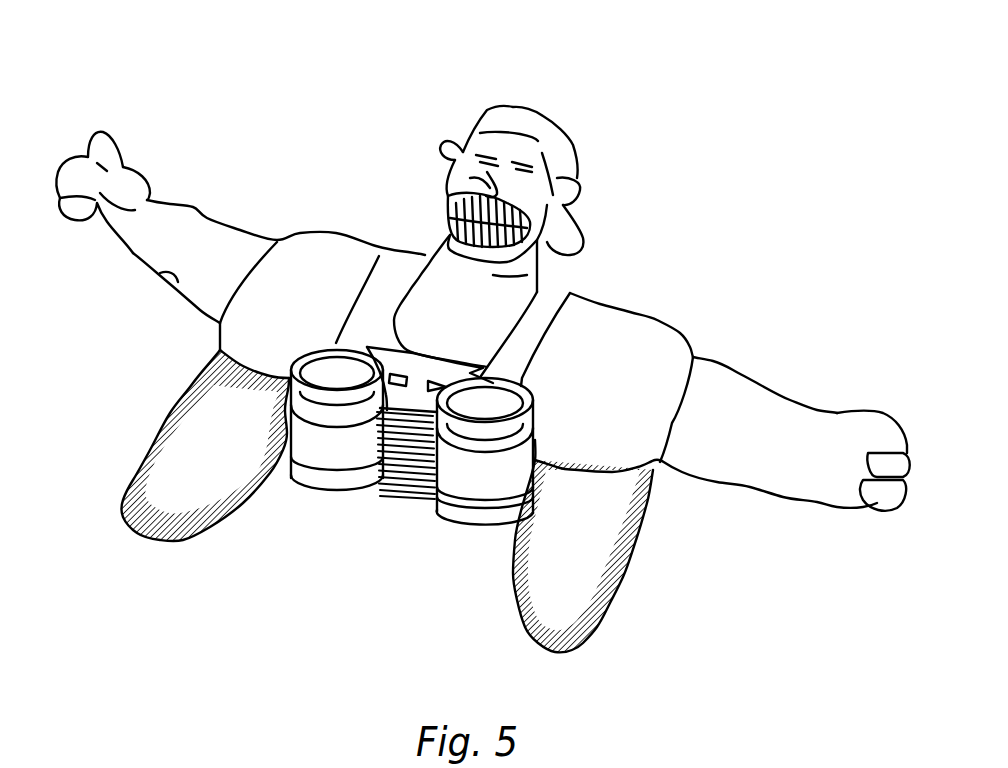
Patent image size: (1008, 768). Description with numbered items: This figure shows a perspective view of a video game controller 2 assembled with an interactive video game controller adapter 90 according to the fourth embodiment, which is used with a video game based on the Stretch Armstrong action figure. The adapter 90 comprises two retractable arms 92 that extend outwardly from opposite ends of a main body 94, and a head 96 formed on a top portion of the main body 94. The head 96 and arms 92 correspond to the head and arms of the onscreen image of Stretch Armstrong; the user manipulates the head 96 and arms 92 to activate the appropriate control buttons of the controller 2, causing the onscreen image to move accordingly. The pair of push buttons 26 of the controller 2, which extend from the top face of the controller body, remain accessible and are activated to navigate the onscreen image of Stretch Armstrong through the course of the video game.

The video game controller 2 is at (577, 648).
The push buttons 26 is at (513, 407).
The adapter 90 is at (562, 290).
The retractable arms 92 is at (810, 430).
The main body 94 is at (577, 422).
The head 96 is at (547, 160).